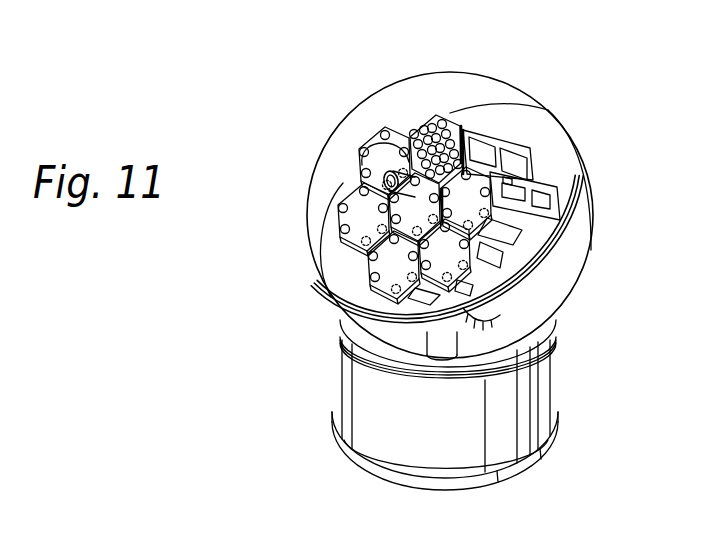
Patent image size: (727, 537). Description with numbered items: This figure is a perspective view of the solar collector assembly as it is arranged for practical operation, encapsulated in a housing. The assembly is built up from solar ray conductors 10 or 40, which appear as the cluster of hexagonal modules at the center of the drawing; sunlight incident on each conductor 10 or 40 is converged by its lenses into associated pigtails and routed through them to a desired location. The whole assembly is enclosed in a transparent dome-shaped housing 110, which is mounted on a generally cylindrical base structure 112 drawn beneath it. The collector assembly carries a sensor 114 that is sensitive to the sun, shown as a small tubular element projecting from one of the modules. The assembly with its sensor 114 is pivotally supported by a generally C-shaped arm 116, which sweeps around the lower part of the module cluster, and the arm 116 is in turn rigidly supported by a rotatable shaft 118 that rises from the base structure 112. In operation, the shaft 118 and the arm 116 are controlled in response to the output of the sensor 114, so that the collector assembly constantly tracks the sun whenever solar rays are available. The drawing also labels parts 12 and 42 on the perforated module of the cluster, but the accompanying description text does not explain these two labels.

The transparent dome-shaped housing 110 is at (503, 84).
The cylindrical base structure 112 is at (343, 370).
The sensor 114 is at (356, 161).
The C-shaped arm 116 is at (508, 313).
The rotatable shaft 118 is at (435, 350).
The solar ray conductor 10 is at (380, 177).
The solar ray conductor 40 is at (377, 127).
The perforated module 12 is at (433, 105).
The perforated module plate 42 is at (430, 115).